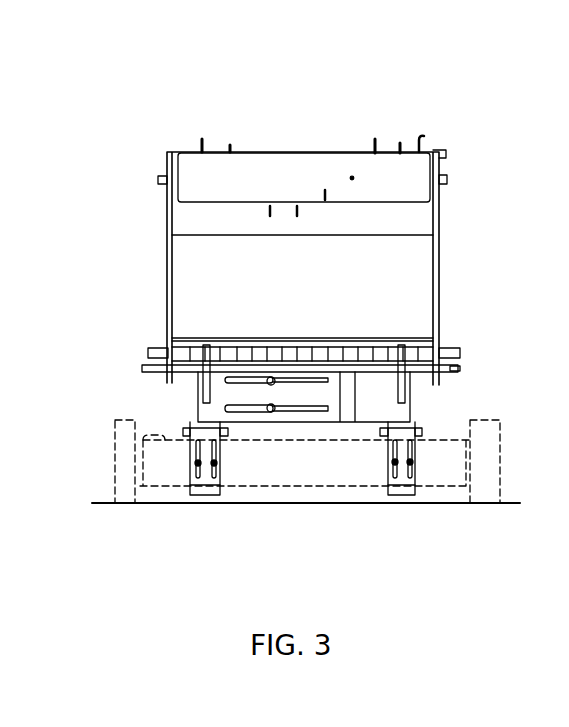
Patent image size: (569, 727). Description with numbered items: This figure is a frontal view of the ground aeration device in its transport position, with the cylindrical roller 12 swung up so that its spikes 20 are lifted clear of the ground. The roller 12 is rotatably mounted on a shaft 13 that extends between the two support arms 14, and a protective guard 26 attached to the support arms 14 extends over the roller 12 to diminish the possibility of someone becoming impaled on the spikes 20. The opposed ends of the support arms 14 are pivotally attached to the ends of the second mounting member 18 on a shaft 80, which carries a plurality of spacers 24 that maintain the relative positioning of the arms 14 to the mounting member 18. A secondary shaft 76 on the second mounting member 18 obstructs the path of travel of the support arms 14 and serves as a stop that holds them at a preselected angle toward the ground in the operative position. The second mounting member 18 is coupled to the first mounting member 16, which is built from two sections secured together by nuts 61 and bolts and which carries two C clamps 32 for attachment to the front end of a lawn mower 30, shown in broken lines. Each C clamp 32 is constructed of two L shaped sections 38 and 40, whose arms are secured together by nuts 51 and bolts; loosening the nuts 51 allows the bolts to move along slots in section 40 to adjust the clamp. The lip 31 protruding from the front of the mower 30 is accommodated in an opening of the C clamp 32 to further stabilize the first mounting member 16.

The cylindrical roller 12 is at (275, 172).
The shaft 13 is at (447, 168).
The support arms 14 is at (172, 232).
The first mounting member 16 is at (342, 405).
The second mounting member 18 is at (205, 389).
The spikes 20 is at (420, 137).
The spacers 24 is at (321, 355).
The protective guard 26 is at (375, 266).
The lawn mower 30 is at (162, 478).
The lip 31 is at (149, 507).
The C clamps 32 is at (208, 480).
The L shaped section 38 is at (196, 488).
The L shaped section 40 is at (213, 438).
The nuts 51 is at (198, 463).
The nuts 61 is at (274, 407).
The secondary shaft 76 is at (456, 369).
The shaft 80 is at (452, 352).